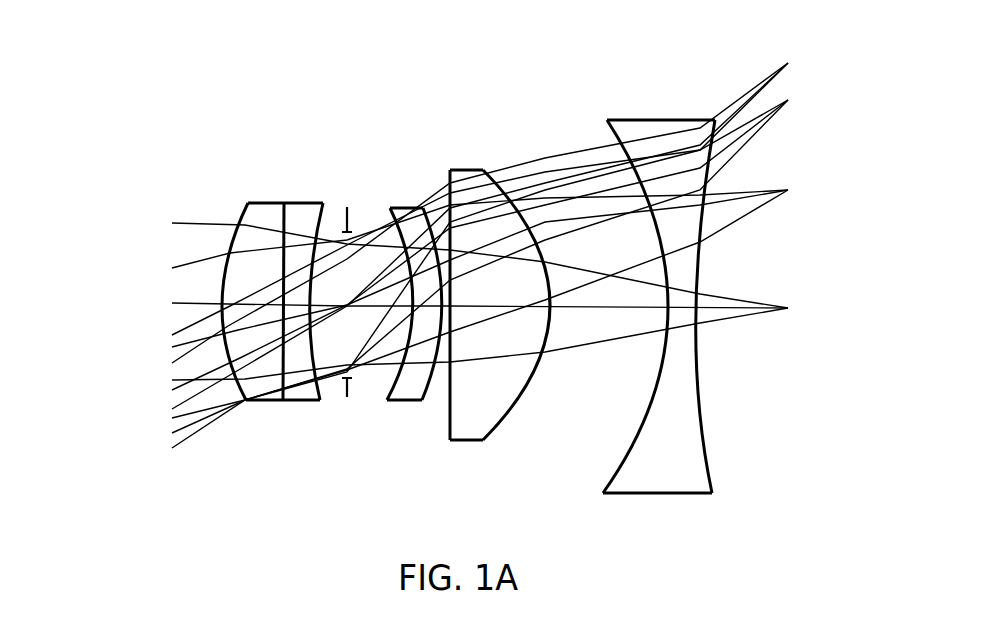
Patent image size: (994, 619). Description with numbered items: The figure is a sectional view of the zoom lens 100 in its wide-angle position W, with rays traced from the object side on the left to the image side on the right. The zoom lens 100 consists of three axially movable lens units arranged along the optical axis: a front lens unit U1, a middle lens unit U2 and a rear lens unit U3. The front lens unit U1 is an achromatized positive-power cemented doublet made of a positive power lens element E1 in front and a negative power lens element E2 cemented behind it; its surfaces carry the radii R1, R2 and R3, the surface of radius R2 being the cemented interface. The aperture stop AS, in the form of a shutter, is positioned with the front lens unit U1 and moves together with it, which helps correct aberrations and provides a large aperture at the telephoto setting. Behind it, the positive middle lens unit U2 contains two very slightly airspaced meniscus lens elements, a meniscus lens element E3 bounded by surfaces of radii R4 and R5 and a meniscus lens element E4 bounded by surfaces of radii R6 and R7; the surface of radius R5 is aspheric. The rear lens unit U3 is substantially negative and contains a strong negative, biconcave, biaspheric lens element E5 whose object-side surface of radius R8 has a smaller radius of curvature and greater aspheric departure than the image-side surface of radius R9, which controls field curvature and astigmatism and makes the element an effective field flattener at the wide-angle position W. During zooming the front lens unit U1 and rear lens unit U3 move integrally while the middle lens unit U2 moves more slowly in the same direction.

The zoom lens 100 is at (737, 77).
The front lens unit U1 is at (330, 459).
The middle lens unit U2 is at (548, 462).
The rear lens unit U3 is at (732, 504).
The positive power lens element E1 is at (262, 390).
The negative power lens element E2 is at (305, 393).
The meniscus lens element E3 is at (412, 390).
The meniscus lens element E4 is at (498, 410).
The negative power lens element E5 is at (690, 445).
The lens surface radius R1 is at (241, 210).
The lens surface radius R2 is at (287, 217).
The lens surface radius R3 is at (322, 213).
The lens surface radius R4 is at (392, 215).
The lens surface radius R5 is at (436, 212).
The lens surface radius R6 is at (453, 182).
The lens surface radius R7 is at (502, 182).
The lens surface radius R8 is at (610, 140).
The lens surface radius R9 is at (709, 194).
The aperture stop AS is at (347, 397).
The wide-angle position W is at (835, 305).